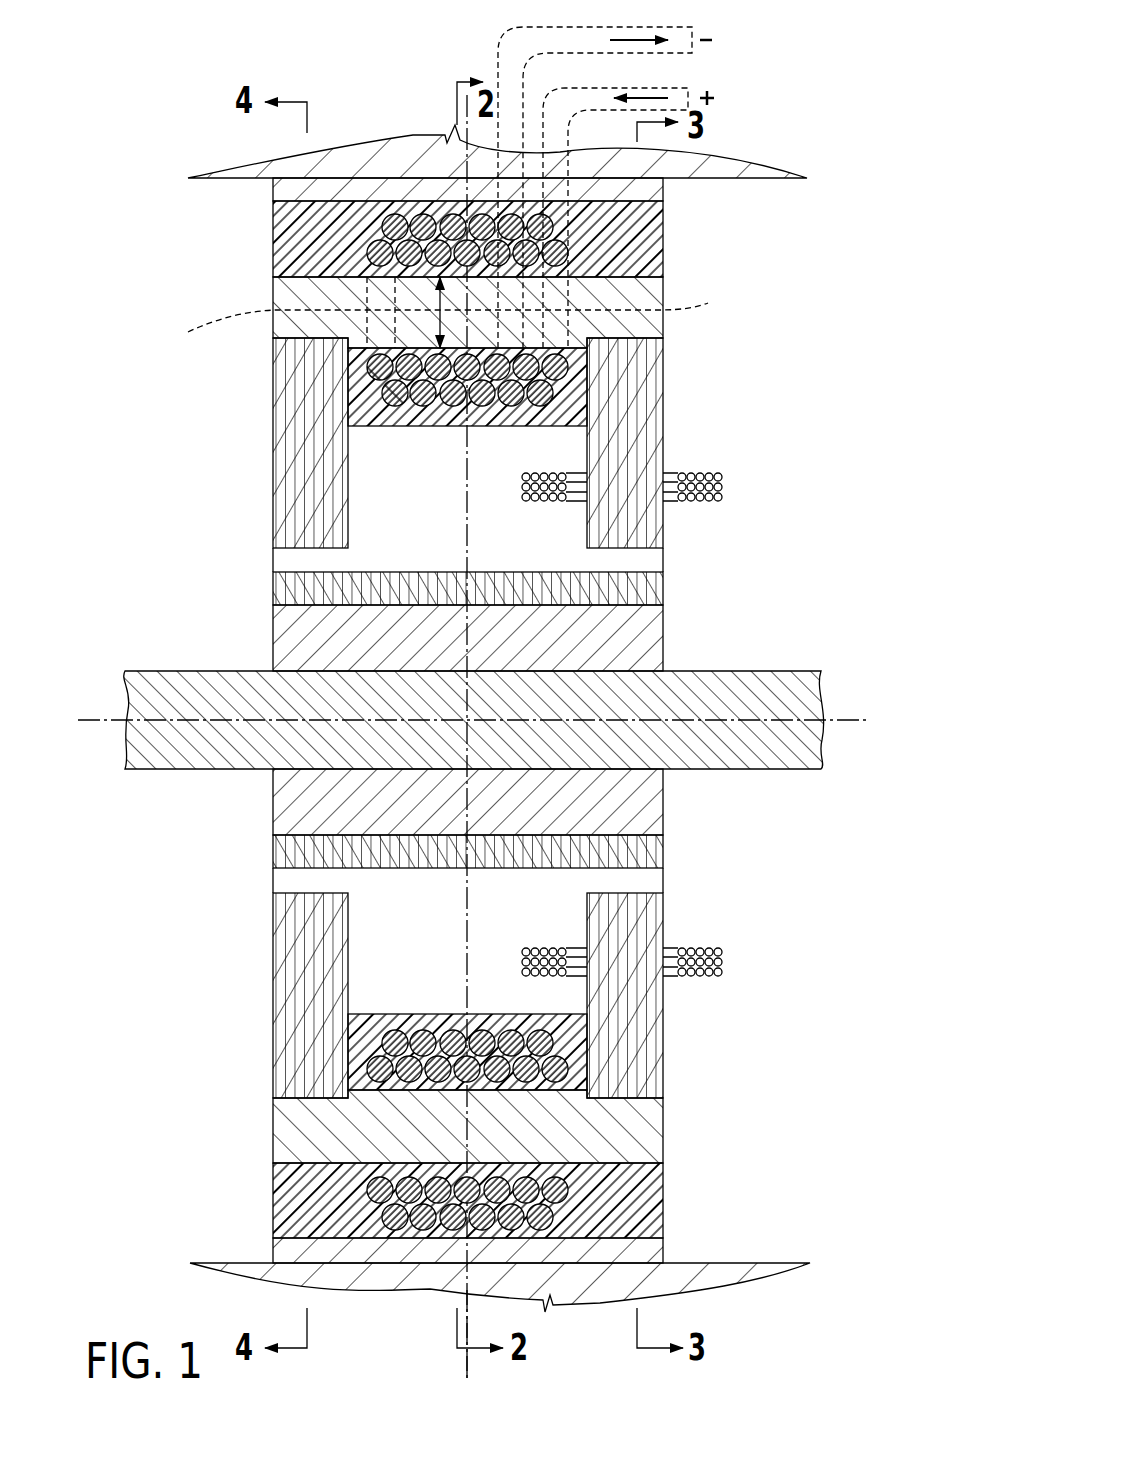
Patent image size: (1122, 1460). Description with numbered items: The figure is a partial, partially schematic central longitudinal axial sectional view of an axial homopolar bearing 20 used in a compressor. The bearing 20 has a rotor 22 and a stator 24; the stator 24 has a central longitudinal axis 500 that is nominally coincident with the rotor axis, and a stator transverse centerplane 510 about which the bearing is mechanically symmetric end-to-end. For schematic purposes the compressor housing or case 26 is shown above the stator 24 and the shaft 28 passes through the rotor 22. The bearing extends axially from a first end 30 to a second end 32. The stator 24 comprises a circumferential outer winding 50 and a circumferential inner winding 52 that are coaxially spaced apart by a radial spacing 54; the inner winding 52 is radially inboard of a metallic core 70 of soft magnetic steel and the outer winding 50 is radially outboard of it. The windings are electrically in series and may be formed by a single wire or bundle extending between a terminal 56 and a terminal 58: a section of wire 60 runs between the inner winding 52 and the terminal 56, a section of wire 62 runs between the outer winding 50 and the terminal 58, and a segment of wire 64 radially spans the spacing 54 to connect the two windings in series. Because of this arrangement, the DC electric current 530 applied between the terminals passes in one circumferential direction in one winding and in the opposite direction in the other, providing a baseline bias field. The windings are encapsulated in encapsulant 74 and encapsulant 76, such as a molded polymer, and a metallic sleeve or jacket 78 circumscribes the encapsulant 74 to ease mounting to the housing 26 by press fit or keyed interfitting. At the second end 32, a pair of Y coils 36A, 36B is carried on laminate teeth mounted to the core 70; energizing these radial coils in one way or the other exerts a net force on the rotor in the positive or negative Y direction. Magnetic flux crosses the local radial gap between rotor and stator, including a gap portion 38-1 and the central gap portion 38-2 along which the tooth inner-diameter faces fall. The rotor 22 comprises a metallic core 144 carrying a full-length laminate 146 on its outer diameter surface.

The axial homopolar bearing 20 is at (130, 165).
The rotor 22 is at (680, 857).
The stator 24 is at (163, 432).
The housing or case 26 is at (365, 143).
The shaft 28 is at (136, 690).
The first end 30 is at (248, 482).
The second end 32 is at (694, 399).
The Y coil 36A is at (733, 980).
The Y coil 36B is at (727, 480).
The portion of the gap 38-1 is at (270, 561).
The central portion of the gap 38-2 is at (647, 560).
The circumferential outer winding 50 is at (395, 252).
The circumferential inner winding 52 is at (356, 370).
The radial spacing 54 is at (437, 305).
The terminal 56 is at (724, 88).
The terminal 58 is at (716, 28).
The section of wire 60 is at (605, 312).
The section of wire 62 is at (498, 62).
The segment of wire 64 is at (312, 312).
The metallic core 70 is at (652, 287).
The encapsulant 74 is at (650, 225).
The encapsulant 76 is at (377, 416).
The metallic sleeve or jacket 78 is at (650, 190).
The metallic core 144 is at (672, 645).
The laminate 146 is at (620, 588).
The central longitudinal axis 500 is at (92, 735).
The stator transverse centerplane 510 is at (455, 1298).
The DC electric current 530 is at (643, 96).